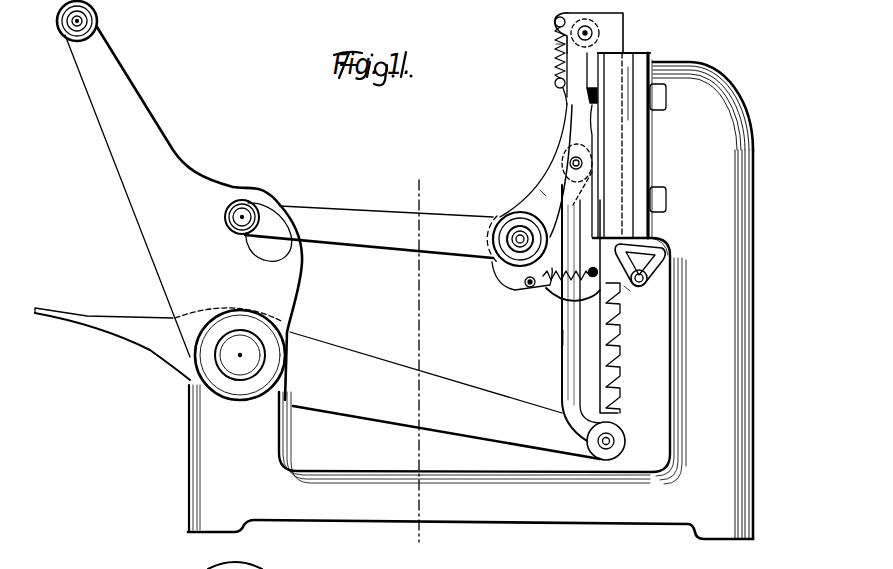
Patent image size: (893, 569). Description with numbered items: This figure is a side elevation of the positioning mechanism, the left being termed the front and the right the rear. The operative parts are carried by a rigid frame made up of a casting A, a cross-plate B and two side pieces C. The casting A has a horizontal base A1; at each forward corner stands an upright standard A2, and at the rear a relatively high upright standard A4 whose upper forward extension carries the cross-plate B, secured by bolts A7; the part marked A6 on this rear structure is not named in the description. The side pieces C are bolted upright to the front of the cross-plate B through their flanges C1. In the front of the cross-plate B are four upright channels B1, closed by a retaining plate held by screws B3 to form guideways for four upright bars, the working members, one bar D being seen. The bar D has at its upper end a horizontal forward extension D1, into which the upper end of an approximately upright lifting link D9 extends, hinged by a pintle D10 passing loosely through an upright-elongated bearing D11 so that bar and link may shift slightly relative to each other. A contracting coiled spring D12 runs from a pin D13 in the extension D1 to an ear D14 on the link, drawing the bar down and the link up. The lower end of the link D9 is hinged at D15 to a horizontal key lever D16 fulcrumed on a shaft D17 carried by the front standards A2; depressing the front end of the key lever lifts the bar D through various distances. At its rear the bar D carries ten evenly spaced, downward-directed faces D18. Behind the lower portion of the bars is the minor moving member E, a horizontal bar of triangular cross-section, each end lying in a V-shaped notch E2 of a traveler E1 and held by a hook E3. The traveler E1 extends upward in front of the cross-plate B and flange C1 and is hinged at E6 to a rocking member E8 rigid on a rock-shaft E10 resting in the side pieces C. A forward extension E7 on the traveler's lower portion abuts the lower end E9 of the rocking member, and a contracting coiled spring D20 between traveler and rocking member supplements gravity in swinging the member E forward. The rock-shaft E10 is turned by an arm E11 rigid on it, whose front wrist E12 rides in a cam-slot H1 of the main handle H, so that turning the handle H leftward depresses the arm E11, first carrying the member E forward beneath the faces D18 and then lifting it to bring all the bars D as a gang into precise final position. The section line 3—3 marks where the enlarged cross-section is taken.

The casting A is at (470, 315).
The horizontal base A1 is at (395, 488).
The upright standard A2 is at (207, 452).
The rear upright standard A4 is at (739, 430).
The frame lug A6 is at (643, 170).
The bolts A7 is at (664, 99).
The cross-plate B is at (655, 62).
The upright channels B1 is at (629, 67).
The screws B3 is at (587, 95).
The side pieces C is at (505, 218).
The flanges C1 is at (590, 128).
The bar D is at (615, 21).
The forward extension D1 is at (555, 21).
The lifting link D9 is at (563, 355).
The pintle D10 is at (592, 33).
The bearing D11 is at (558, 45).
The contracting coiled spring D12 is at (555, 83).
The pin D13 is at (556, 29).
The ear D14 is at (567, 92).
The hinge D15 is at (614, 428).
The key lever D16 is at (130, 318).
The shaft D17 is at (255, 345).
The downward-directed faces D18 is at (617, 353).
The contracting coiled spring D20 is at (557, 281).
The minor moving member E is at (660, 241).
The traveler E1 is at (627, 289).
The V-shape notch E2 is at (643, 262).
The hook E3 is at (660, 228).
The hinge E6 is at (569, 163).
The forward extension E7 is at (563, 332).
The rocking member E8 is at (543, 193).
The lower end of rocking member E9 is at (530, 288).
The rock-shaft E10 is at (507, 251).
The arm E11 is at (410, 218).
The wrist E12 is at (247, 200).
The main handle H is at (107, 43).
The cam-slot H1 is at (285, 250).
The section line 3 is at (417, 365).